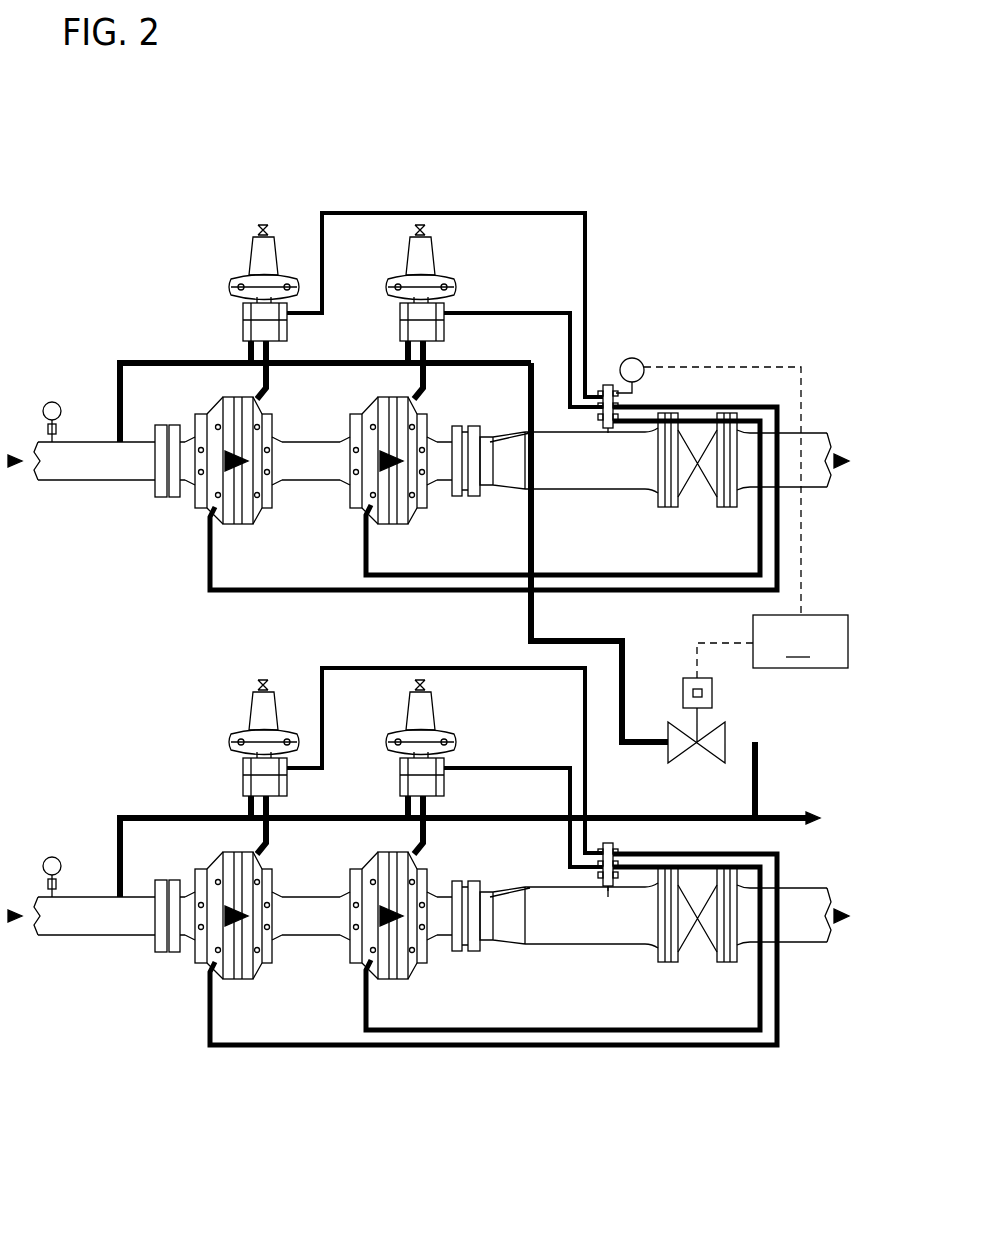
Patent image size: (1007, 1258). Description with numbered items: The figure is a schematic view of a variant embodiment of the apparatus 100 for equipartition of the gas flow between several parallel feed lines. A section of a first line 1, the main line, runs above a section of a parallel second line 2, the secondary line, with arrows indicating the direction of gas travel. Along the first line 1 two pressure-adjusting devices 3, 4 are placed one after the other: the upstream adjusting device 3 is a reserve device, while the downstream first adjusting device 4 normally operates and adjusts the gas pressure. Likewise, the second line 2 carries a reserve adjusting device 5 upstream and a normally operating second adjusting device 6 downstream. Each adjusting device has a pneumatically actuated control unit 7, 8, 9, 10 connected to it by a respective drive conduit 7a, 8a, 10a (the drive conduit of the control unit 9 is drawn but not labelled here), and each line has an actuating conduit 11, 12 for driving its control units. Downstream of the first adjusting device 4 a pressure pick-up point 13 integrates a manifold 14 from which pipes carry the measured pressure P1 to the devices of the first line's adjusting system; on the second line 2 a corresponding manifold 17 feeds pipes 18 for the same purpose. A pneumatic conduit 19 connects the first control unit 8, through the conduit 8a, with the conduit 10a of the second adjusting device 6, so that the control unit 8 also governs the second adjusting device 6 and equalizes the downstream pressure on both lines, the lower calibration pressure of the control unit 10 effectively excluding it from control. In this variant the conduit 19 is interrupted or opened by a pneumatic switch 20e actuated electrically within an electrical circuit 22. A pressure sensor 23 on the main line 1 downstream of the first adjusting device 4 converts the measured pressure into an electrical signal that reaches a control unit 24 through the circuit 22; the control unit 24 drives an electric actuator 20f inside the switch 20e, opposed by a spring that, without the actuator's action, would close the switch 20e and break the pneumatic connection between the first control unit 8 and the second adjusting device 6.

The apparatus for equipartition of the flow 100 is at (652, 186).
The first line 1 is at (88, 440).
The second line 2 is at (85, 895).
The adjusting device 3 is at (205, 408).
The first adjusting device 4 is at (350, 430).
The adjusting device 5 is at (205, 865).
The second adjusting device 6 is at (350, 885).
The control unit 7 is at (243, 250).
The drive conduit 7a is at (272, 395).
The first control unit 8 is at (428, 250).
The drive conduit 8a is at (432, 392).
The control unit 9 is at (243, 708).
The control unit 10 is at (403, 708).
The drive conduit 10a is at (432, 848).
The actuating conduit 11 is at (132, 355).
The actuating conduit 12 is at (132, 812).
The pressure pick-up point 13 is at (605, 435).
The manifold 14 is at (605, 383).
The manifold 17 is at (615, 845).
The pipes 18 is at (313, 690).
The pneumatic conduit 19 is at (520, 628).
The pneumatic switch actuated electrically 20e is at (712, 730).
The electric actuator 20f is at (712, 690).
The electrical circuit 22 is at (803, 388).
The pressure sensor 23 is at (642, 362).
The control unit 24 is at (772, 646).